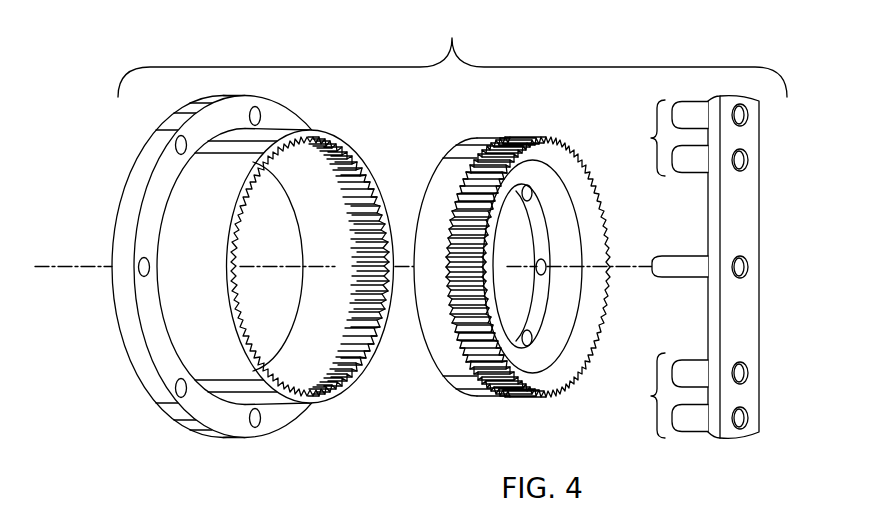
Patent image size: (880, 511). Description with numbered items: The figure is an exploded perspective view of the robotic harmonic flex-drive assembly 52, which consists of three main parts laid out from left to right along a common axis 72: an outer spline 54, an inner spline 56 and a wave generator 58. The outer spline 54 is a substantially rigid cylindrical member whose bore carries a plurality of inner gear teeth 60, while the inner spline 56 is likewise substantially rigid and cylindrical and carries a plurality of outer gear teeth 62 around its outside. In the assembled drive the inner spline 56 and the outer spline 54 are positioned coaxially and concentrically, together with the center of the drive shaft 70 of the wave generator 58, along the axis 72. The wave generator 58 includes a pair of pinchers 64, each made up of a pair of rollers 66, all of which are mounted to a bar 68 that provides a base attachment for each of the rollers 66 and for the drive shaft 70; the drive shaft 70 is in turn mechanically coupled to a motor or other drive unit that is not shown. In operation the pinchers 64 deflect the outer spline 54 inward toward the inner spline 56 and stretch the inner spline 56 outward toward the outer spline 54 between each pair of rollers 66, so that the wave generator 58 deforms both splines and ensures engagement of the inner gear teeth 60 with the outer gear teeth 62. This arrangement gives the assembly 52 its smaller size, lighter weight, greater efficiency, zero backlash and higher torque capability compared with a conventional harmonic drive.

The robotic harmonic flex-drive assembly 52 is at (452, 53).
The outer spline 54 is at (152, 145).
The inner spline 56 is at (514, 252).
The wave generator 58 is at (759, 267).
The inner gear teeth 60 is at (333, 388).
The outer gear teeth 62 is at (557, 139).
The pinchers 64 is at (642, 269).
The rollers 66 is at (690, 100).
The bar 68 is at (752, 327).
The drive shaft 70 is at (660, 258).
The axis 72 is at (68, 272).